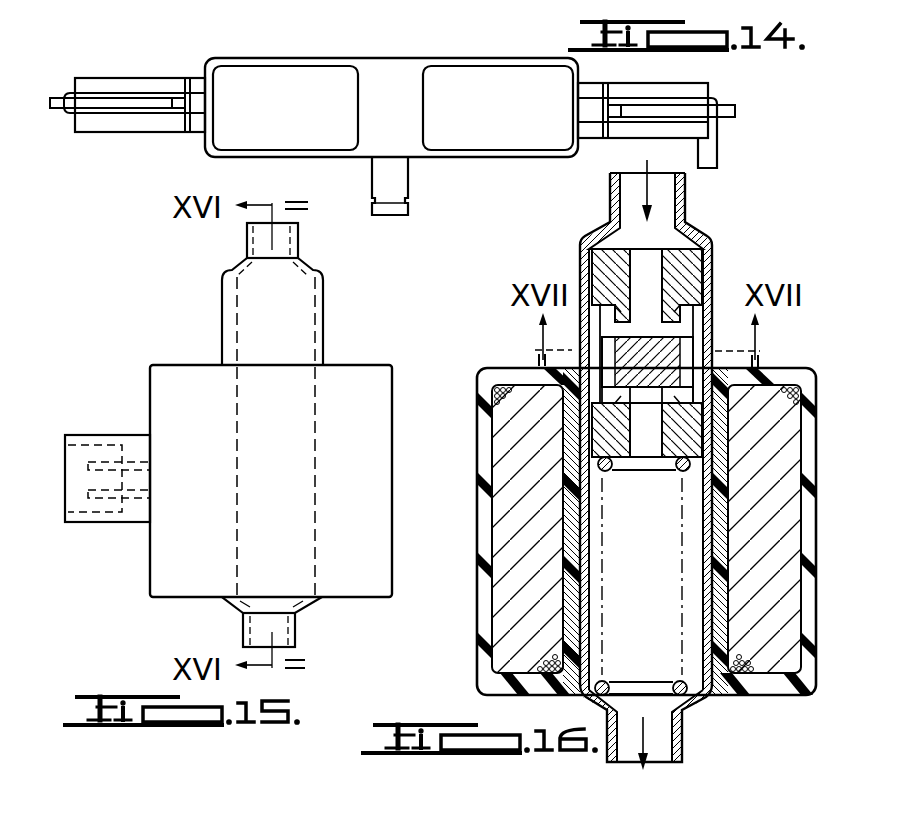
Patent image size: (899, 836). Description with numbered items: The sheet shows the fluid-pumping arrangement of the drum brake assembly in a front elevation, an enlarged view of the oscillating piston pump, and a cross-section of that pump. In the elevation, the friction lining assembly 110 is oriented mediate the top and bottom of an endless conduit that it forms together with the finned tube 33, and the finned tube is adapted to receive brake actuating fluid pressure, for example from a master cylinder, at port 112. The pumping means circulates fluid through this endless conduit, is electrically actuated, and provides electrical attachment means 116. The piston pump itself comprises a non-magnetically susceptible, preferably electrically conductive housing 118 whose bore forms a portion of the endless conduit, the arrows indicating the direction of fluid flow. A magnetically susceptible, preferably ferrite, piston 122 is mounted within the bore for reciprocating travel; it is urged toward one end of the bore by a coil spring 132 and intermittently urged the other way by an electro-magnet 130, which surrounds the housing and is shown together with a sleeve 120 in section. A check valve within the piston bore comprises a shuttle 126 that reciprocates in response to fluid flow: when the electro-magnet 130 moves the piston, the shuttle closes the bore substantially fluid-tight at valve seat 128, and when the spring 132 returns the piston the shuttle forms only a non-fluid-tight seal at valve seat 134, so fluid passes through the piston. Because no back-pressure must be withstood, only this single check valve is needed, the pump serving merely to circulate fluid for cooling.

In FIG. 14, the finned tube 33 is at (144, 78).
In FIG. 14, the friction lining assembly 110 is at (483, 60).
In FIG. 14, the port 112 is at (718, 148).
In FIG. 15, the electrical attachment means 116 is at (84, 435).
In FIG. 15, the housing 118 is at (222, 295).
In FIG. 16, the housing 118 is at (713, 250).
In FIG. 16, the sleeve 120 is at (703, 515).
In FIG. 16, the piston 122 is at (688, 301).
In FIG. 16, the shuttle 126 is at (647, 362).
In FIG. 16, the valve seat 128 is at (688, 312).
In FIG. 15, the electro-magnet 130 is at (376, 365).
In FIG. 16, the electro-magnet 130 is at (490, 512).
In FIG. 16, the spring 132 is at (600, 681).
In FIG. 16, the valve seat 134 is at (615, 389).